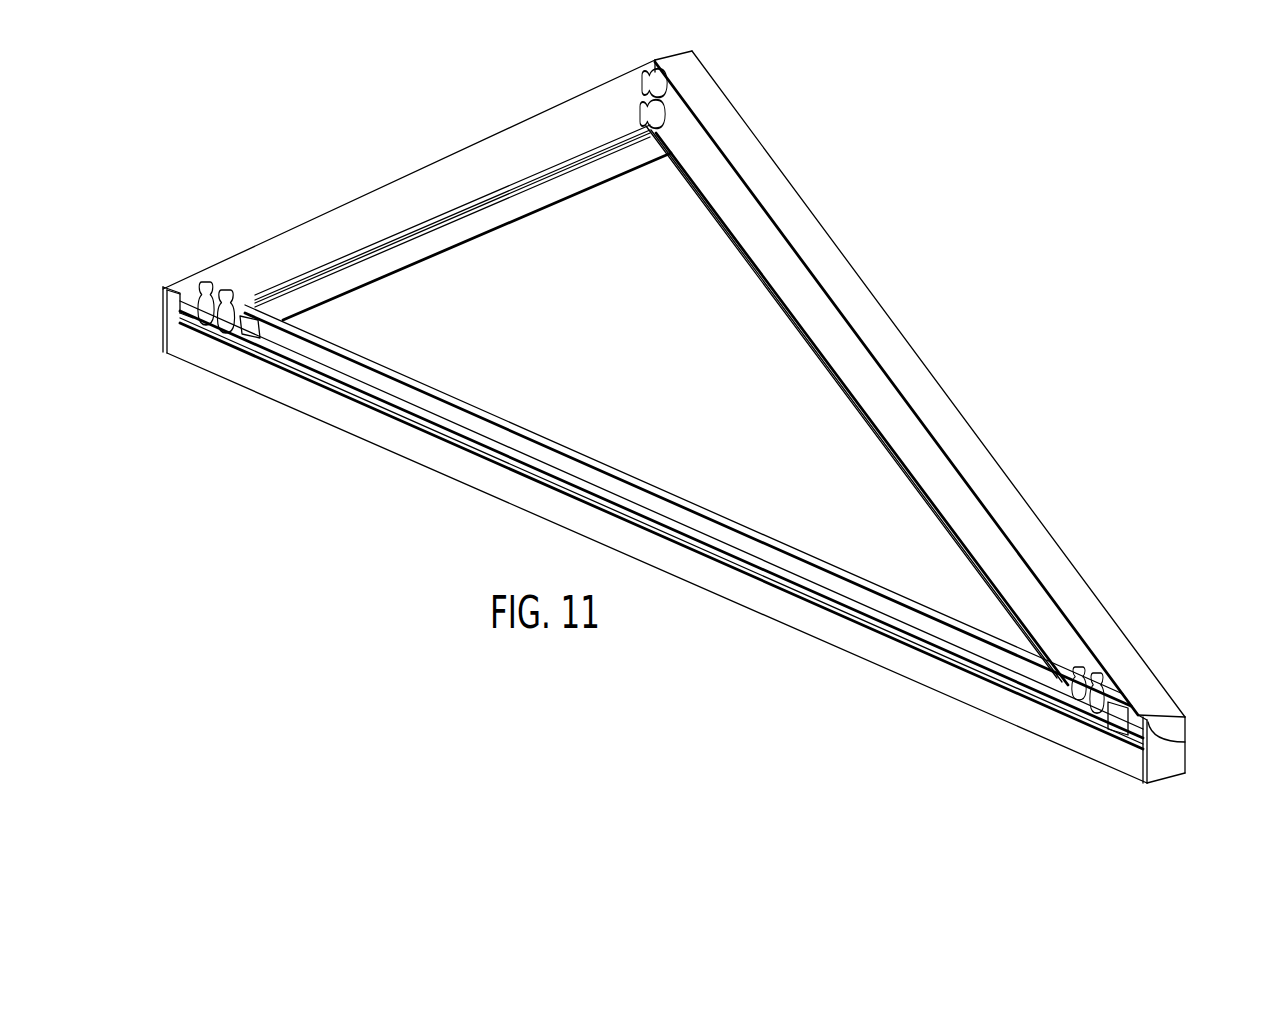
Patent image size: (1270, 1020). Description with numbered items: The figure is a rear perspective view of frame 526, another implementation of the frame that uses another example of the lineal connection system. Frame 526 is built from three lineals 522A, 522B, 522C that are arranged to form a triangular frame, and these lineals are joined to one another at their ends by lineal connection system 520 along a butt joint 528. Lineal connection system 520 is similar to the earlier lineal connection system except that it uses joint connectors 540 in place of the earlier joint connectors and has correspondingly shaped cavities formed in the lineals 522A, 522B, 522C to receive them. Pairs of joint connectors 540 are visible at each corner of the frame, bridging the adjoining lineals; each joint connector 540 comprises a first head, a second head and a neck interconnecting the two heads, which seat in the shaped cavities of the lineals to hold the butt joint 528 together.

The lineal connection system 520 is at (1113, 681).
The lineal 522A is at (518, 507).
The lineal 522B is at (1022, 522).
The lineal 522C is at (416, 176).
The frame 526 is at (958, 267).
The butt joint 528 is at (1186, 741).
The joint connector 540 is at (641, 112).